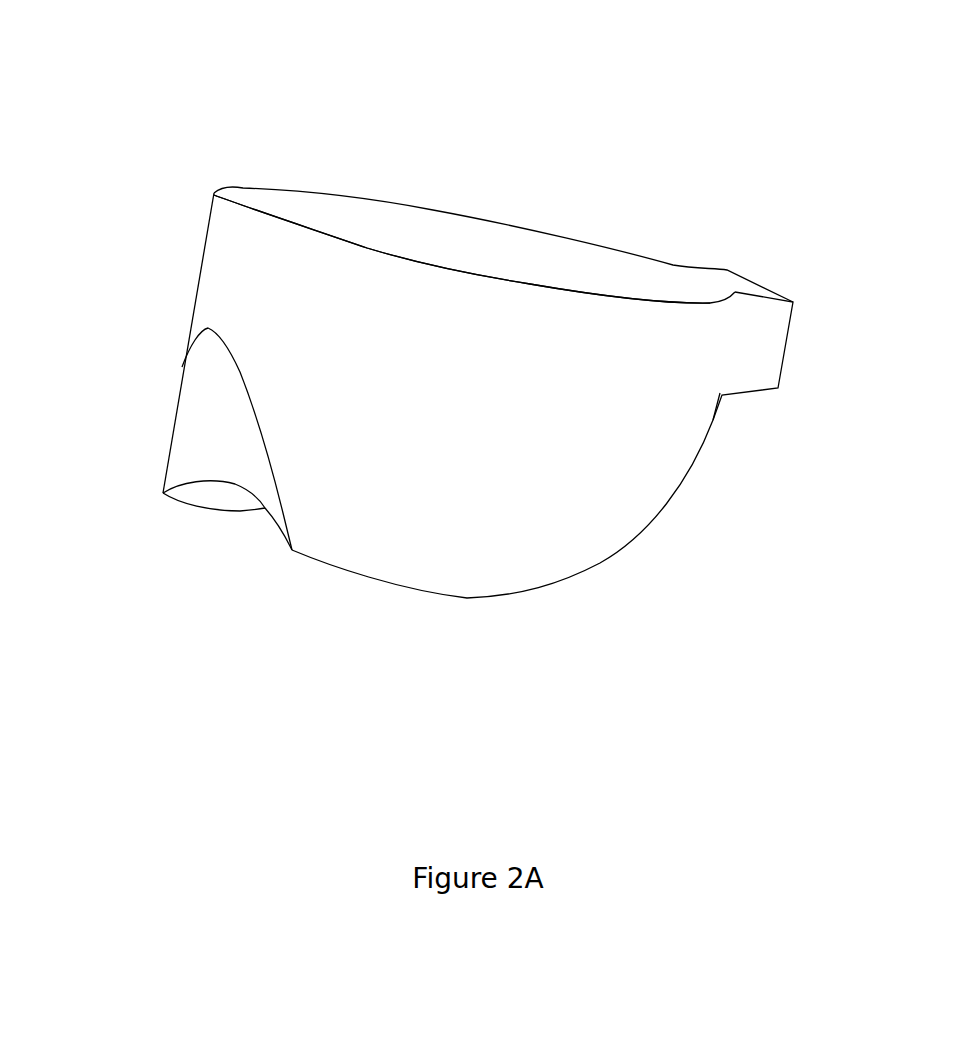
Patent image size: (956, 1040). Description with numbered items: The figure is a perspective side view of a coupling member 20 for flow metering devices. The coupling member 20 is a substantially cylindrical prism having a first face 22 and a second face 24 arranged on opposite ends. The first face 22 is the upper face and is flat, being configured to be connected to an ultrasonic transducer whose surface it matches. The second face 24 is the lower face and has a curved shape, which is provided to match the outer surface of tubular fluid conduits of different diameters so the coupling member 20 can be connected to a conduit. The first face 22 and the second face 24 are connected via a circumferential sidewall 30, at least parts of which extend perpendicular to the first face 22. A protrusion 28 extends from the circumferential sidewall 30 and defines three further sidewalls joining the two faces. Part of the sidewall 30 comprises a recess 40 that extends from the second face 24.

The coupling member 20 is at (126, 28).
The first face 22 is at (513, 252).
The second face 24 is at (270, 523).
The protrusion 28 is at (758, 348).
The circumferential sidewall 30 is at (202, 298).
The recess 40 is at (217, 420).